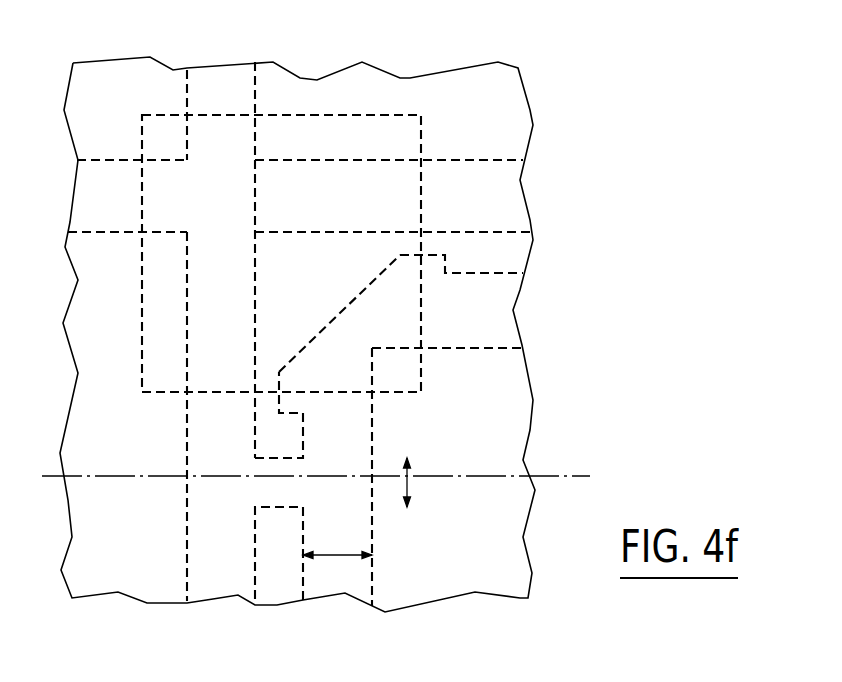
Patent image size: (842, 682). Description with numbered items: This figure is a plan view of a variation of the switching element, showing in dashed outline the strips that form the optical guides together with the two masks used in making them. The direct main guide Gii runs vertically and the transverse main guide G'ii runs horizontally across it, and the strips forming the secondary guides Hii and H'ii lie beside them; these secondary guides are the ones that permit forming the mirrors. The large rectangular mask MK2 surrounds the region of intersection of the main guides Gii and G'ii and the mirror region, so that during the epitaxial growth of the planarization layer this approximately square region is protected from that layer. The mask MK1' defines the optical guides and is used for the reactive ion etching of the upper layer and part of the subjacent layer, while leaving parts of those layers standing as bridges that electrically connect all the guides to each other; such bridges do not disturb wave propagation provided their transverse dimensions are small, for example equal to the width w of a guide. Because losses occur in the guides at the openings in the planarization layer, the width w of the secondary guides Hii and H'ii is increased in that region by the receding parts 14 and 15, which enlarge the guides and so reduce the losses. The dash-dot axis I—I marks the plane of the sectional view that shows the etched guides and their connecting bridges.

The mask MK2 is at (338, 115).
The mask MK1' is at (150, 368).
The transverse main guide G'ii is at (332, 195).
The direct main guide Gii is at (216, 583).
The secondary guide H'ii is at (437, 313).
The secondary guide Hii is at (345, 583).
The receding part 14 is at (452, 262).
The receding part 15 is at (292, 418).
The axis I— I is at (316, 477).
The width of the guides w is at (366, 508).